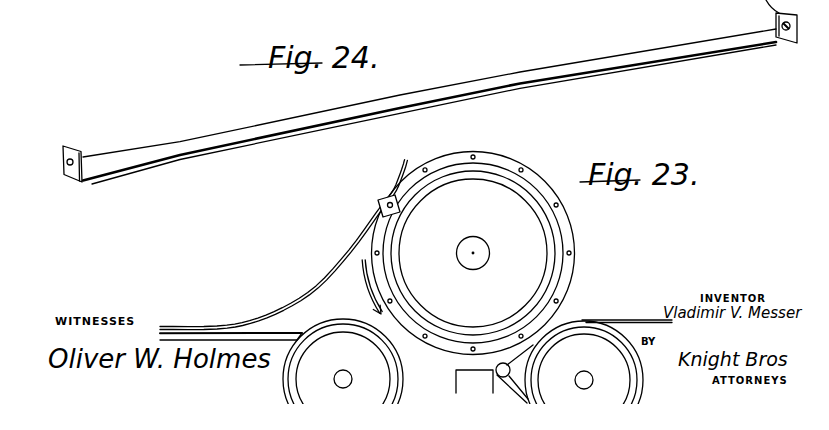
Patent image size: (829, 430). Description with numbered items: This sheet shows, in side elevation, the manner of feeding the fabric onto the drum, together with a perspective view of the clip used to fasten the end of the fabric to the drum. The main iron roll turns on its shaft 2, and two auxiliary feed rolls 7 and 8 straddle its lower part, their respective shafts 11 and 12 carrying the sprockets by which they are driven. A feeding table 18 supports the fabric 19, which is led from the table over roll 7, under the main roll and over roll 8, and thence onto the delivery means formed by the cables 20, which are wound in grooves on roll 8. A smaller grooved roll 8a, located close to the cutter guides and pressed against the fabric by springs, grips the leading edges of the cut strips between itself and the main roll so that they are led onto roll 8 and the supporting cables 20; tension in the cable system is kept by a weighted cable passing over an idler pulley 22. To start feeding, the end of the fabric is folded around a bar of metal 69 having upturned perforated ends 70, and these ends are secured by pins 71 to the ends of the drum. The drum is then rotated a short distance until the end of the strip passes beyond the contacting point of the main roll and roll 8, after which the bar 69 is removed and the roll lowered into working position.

In FIG. 23, the shaft 2 is at (490, 253).
In FIG. 23, the auxiliary feed roll 7 is at (523, 142).
In FIG. 23, the auxiliary feed roll 8 is at (584, 375).
In FIG. 23, the smaller roll 8a is at (511, 372).
In FIG. 23, the shaft 11 is at (356, 406).
In FIG. 23, the shaft 12 is at (584, 389).
In FIG. 23, the feeding table 18 is at (258, 335).
In FIG. 23, the fabric 19 is at (298, 300).
In FIG. 23, the cables 20 is at (641, 320).
In FIG. 23, the idler pulley 22 is at (378, 200).
In FIG. 24, the bar of metal 69 is at (585, 62).
In FIG. 23, the bar of metal 69 is at (387, 195).
In FIG. 24, the upturned perforated ends 70 is at (77, 144).
In FIG. 23, the upturned perforated ends 70 is at (394, 206).
In FIG. 23, the pins 71 is at (380, 210).